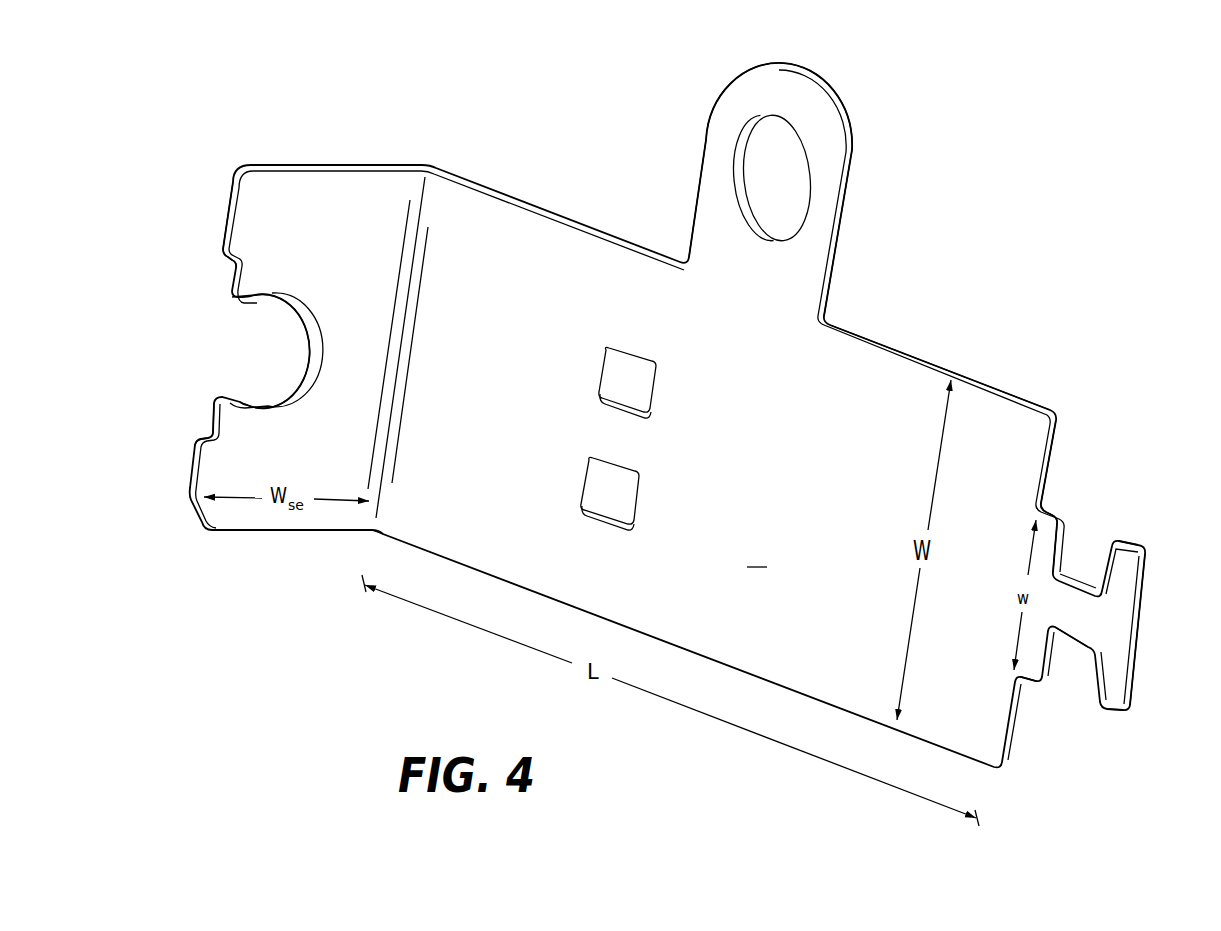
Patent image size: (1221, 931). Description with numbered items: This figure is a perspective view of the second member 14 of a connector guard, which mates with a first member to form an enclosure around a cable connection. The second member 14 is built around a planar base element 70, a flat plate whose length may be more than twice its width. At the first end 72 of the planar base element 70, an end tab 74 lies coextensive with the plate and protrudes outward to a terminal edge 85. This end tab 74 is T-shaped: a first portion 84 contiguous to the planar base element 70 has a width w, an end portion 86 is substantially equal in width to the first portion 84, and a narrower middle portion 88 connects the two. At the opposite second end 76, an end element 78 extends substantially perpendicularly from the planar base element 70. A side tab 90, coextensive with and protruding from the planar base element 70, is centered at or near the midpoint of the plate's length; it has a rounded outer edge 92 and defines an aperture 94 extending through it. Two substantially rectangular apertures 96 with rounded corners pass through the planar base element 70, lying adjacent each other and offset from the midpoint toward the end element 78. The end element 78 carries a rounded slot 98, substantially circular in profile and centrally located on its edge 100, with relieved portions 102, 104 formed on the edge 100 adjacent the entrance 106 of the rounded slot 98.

The second member 14 is at (957, 285).
The planar base element 70 is at (667, 415).
The first end 72 is at (1077, 469).
The end tab 74 is at (1146, 548).
The second end 76 is at (371, 547).
The end element 78 is at (320, 181).
The first portion 84 is at (1022, 678).
The terminal edge 85 is at (1136, 633).
The end portion 86 is at (1103, 713).
The middle portion 88 is at (1067, 634).
The side tab 90 is at (828, 207).
The rounded outer edge 92 is at (798, 64).
The aperture 94 is at (789, 152).
The apertures 96 is at (643, 504).
The rounded slot 98 is at (296, 295).
The edge 100 is at (231, 203).
The relieved portion 102 is at (231, 280).
The relieved portion 104 is at (212, 417).
The entrance 106 is at (240, 363).